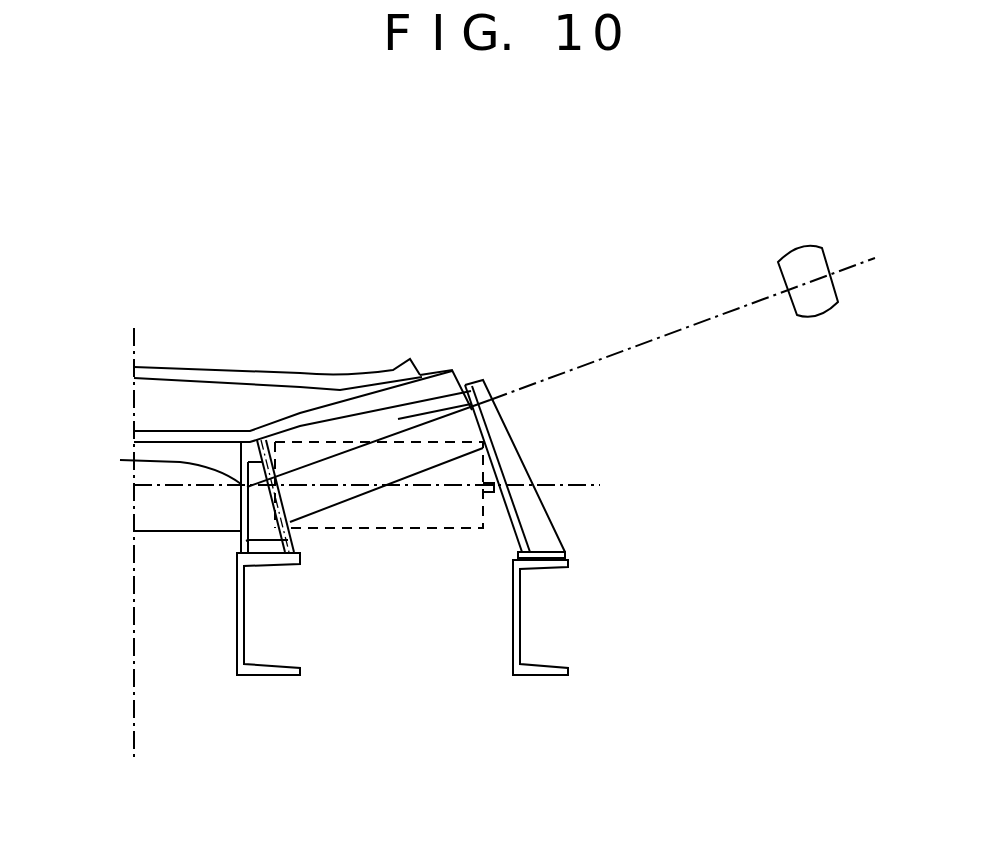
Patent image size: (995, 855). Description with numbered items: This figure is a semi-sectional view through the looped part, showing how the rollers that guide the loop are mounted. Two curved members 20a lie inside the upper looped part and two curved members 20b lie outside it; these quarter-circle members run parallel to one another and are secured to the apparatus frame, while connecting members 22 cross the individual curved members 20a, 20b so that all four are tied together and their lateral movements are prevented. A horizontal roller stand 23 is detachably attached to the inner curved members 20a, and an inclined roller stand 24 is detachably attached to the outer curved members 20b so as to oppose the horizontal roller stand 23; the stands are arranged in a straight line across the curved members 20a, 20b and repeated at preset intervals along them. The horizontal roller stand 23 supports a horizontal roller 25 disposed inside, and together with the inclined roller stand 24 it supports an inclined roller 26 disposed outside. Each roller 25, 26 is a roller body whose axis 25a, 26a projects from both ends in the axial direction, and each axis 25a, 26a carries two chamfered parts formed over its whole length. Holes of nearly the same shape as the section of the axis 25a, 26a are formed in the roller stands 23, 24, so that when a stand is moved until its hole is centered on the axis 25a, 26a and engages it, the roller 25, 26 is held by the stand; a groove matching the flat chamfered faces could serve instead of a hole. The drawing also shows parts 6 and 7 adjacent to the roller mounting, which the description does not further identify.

The upper electrode strip 6 is at (173, 433).
The cover strip 7 is at (213, 367).
The curved member 20a is at (237, 640).
The curved member 20b is at (513, 645).
The connecting member 22 is at (371, 643).
The horizontal roller stand 23 is at (248, 540).
The inclined roller stand 24 is at (543, 522).
The horizontal roller 25 is at (160, 518).
The axis 25a is at (148, 463).
The inclined roller 26 is at (437, 402).
The axis 26a is at (468, 403).